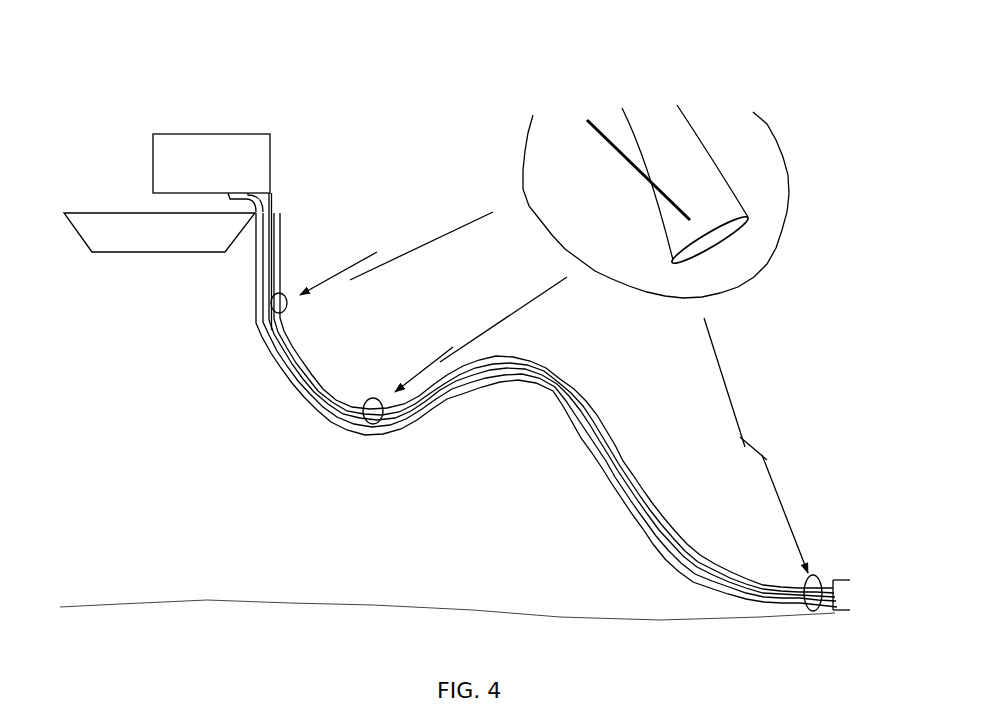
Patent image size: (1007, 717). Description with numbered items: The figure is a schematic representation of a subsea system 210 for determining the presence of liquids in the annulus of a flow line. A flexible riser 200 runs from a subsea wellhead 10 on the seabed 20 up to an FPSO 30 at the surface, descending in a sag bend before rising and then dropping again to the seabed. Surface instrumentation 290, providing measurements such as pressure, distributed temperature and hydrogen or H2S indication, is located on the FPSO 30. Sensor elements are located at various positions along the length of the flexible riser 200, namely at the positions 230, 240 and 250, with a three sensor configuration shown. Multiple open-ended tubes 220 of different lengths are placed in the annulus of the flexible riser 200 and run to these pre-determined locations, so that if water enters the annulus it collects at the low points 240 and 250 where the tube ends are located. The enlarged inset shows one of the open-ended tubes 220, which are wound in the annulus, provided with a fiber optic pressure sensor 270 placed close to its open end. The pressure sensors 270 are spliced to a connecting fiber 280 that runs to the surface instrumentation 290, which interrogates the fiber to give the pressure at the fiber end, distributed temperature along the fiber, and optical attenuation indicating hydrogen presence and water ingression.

The subsea system 210 is at (105, 63).
The surface instrumentation 290 is at (183, 140).
The FPSO 30 is at (162, 240).
The flexible riser 200 is at (448, 356).
The open-ended tubes 220 is at (790, 272).
The sensor element position 230 is at (280, 294).
The sensor element position 240 is at (375, 398).
The sensor element position 250 is at (818, 576).
The subsea wellhead 10 is at (843, 598).
The connecting fiber 280 is at (622, 117).
The fiber optic pressure sensor 270 is at (670, 200).
The seabed 20 is at (447, 624).